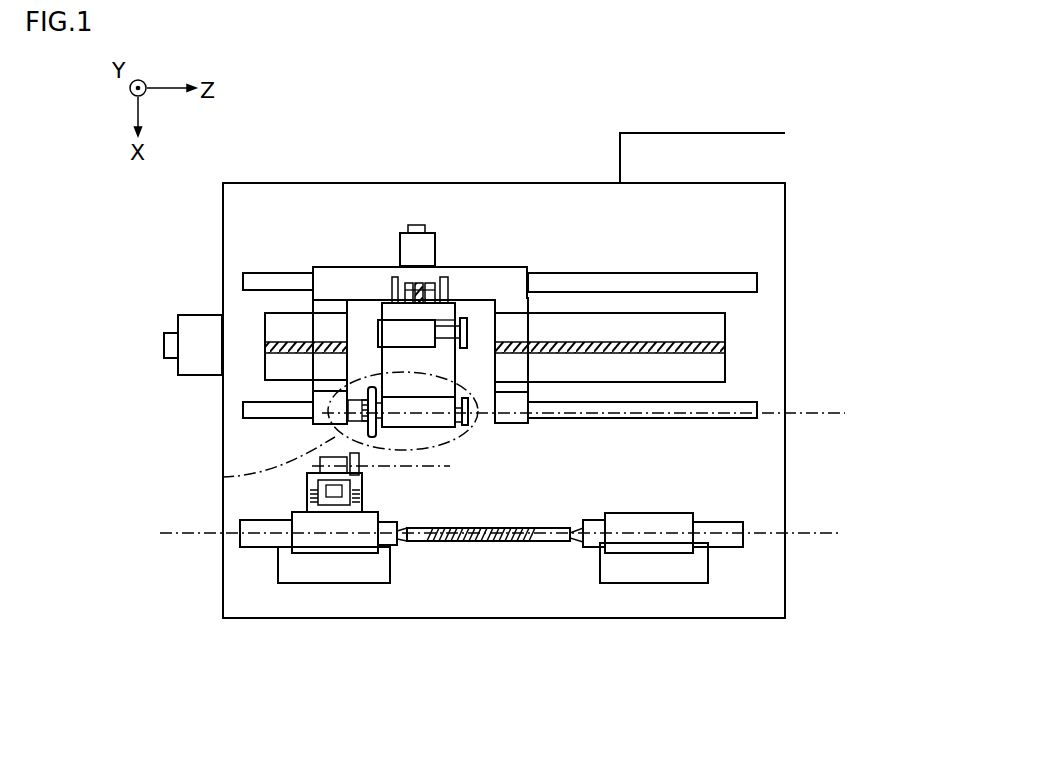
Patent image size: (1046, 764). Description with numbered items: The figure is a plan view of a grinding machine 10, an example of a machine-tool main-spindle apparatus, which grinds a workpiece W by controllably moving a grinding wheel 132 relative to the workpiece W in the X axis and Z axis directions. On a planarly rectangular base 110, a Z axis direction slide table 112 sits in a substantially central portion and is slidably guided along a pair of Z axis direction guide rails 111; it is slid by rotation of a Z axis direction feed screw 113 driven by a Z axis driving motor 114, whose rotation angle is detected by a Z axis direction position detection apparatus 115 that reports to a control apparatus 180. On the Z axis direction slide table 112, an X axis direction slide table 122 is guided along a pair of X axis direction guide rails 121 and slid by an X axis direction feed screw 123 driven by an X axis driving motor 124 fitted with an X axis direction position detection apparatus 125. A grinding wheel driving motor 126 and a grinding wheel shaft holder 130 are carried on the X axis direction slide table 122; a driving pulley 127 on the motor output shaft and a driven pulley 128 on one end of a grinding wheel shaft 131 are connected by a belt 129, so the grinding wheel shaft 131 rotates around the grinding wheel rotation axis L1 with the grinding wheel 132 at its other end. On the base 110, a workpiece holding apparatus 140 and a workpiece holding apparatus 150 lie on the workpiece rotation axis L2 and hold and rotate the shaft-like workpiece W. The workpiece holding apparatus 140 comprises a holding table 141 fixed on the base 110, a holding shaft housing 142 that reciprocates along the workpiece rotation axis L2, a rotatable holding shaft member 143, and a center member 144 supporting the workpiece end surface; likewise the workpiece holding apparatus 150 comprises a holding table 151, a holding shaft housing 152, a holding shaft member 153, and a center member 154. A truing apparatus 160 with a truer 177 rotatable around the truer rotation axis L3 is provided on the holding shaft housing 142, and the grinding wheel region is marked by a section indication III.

The grinding machine 10 is at (575, 126).
The base 110 is at (247, 618).
The Z axis direction guide rails 111 is at (257, 402).
The Z axis direction slide table 112 is at (520, 267).
The Z axis direction feed screw 113 is at (277, 313).
The Z axis driving motor 114 is at (200, 378).
The Z axis direction position detection apparatus 115 is at (163, 357).
The X axis direction guide rails 121 is at (400, 265).
The X axis direction slide table 122 is at (458, 303).
The X axis direction feed screw 123 is at (387, 303).
The X axis driving motor 124 is at (400, 252).
The X axis direction position detection apparatus 125 is at (408, 228).
The grinding wheel driving motor 126 is at (378, 328).
The driving pulley 127 is at (465, 332).
The driven pulley 128 is at (466, 422).
The belt 129 is at (468, 412).
The grinding wheel shaft holder 130 is at (398, 398).
The grinding wheel shaft 131 is at (405, 418).
The grinding wheel 132 is at (372, 390).
The workpiece holding apparatus 140 is at (271, 565).
The holding table 141 is at (303, 583).
The holding shaft housing 142 is at (353, 545).
The holding shaft member 143 is at (397, 545).
The center member 144 is at (405, 545).
The workpiece holding apparatus 150 is at (653, 592).
The holding table 151 is at (690, 585).
The holding shaft housing 152 is at (653, 512).
The holding shaft member 153 is at (590, 547).
The center member 154 is at (577, 545).
The truing apparatus 160 is at (288, 496).
The truer 177 is at (358, 465).
The control apparatus 180 is at (722, 129).
The workpiece W is at (470, 541).
The grinding wheel rotation axis L1 is at (803, 409).
The workpiece rotation axis L2 is at (822, 546).
The truer rotation axis L3 is at (433, 466).
The section line III is at (222, 477).